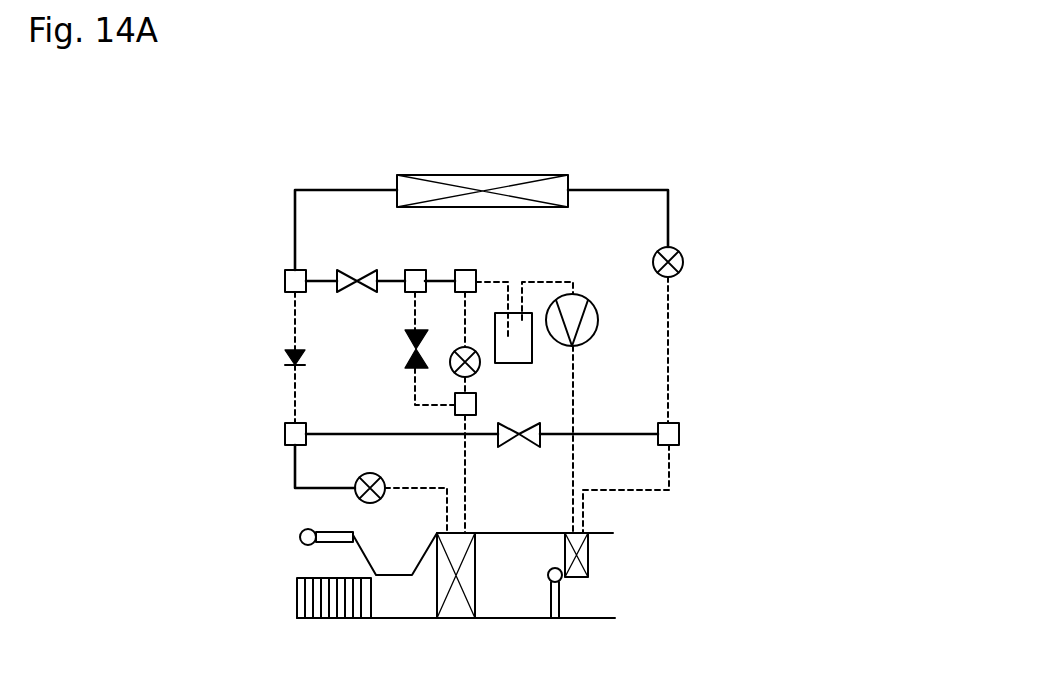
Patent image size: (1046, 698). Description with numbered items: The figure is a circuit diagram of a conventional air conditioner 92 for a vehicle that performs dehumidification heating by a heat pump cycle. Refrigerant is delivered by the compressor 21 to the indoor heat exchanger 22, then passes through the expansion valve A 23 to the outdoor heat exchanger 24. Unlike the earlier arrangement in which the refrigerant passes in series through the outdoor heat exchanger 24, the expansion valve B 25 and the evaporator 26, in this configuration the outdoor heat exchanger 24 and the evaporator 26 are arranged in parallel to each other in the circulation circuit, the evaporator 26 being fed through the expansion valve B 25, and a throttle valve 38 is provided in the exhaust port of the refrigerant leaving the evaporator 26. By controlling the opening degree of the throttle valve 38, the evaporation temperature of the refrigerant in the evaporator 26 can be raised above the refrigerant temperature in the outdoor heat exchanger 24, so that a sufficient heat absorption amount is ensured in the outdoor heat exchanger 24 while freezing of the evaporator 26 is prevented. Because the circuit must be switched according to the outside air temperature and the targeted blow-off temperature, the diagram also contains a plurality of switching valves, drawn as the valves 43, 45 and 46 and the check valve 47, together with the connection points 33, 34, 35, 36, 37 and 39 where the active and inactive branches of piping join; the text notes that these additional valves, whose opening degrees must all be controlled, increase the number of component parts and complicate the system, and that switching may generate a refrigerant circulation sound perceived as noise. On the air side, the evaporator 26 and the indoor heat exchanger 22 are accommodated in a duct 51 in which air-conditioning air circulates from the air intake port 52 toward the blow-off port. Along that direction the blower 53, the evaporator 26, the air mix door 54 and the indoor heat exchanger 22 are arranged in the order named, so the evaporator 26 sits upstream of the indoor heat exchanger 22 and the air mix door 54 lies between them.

The air conditioner for a vehicle 92 is at (168, 150).
The outdoor heat exchanger 24 is at (436, 175).
The branch point 33 is at (283, 282).
The valve 43 is at (350, 270).
The branch point 39 is at (415, 270).
The branch point 34 is at (465, 270).
The throttle valve 38 is at (472, 348).
The expansion valve A 23 is at (685, 262).
The compressor 21 is at (598, 318).
The check valve 47 is at (283, 357).
The valve 45 is at (405, 346).
The junction point 35 is at (455, 405).
The branch point 36 is at (285, 435).
The junction point 37 is at (683, 434).
The valve 46 is at (513, 447).
The expansion valve B 25 is at (361, 478).
The evaporator 26 is at (515, 363).
The indoor heat exchanger 22 is at (590, 555).
The duct 51 is at (395, 620).
The air intake port 52 is at (300, 537).
The blower 53 is at (330, 620).
The air mix door 54 is at (548, 597).